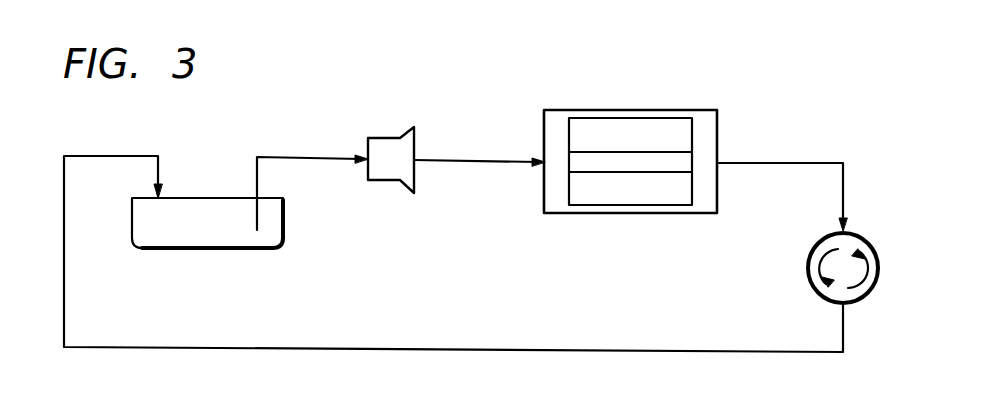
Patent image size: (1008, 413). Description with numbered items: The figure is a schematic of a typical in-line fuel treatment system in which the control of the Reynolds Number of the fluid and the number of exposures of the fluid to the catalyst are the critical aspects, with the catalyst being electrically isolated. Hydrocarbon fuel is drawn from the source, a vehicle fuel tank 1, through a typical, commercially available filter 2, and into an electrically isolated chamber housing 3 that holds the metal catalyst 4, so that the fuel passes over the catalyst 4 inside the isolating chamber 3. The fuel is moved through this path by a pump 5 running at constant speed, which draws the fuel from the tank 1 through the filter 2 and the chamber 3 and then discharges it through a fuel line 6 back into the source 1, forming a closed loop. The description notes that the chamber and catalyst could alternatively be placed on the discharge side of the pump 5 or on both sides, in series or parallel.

The source (fuel tank) 1 is at (283, 222).
The filter 2 is at (385, 138).
The isolating chamber 3 is at (668, 100).
The catalyst 4 is at (598, 150).
The constant speed pump 5 is at (868, 238).
The fuel line 6 is at (553, 350).